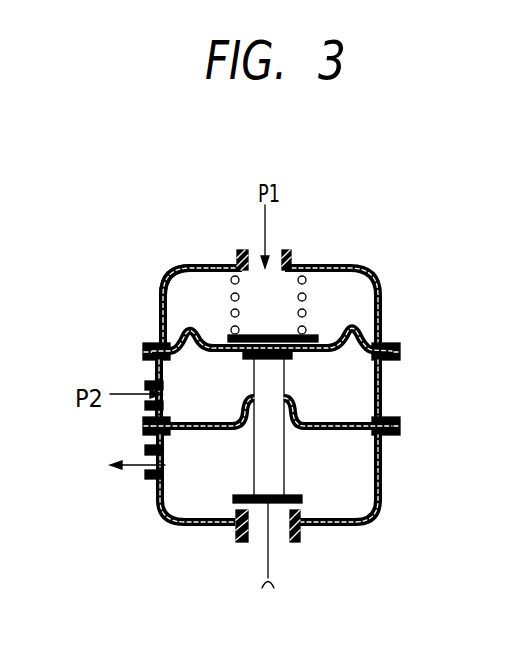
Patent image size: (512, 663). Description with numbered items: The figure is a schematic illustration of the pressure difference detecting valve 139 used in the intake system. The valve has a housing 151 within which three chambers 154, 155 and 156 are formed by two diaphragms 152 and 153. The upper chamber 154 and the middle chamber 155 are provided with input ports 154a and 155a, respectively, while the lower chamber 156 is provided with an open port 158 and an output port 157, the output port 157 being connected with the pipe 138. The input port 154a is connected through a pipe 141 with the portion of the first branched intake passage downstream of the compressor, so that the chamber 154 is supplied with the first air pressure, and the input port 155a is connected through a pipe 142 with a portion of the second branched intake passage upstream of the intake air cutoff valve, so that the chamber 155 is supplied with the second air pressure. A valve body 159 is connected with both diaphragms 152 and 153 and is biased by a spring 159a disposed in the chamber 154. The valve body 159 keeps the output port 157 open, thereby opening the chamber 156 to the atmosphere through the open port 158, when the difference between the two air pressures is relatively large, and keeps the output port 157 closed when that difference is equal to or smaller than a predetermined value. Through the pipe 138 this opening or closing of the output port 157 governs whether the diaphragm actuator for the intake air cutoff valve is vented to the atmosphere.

The pipe 138 is at (274, 562).
The pressure difference detecting valve 139 is at (370, 250).
The pipe 141 is at (270, 272).
The pipe 142 is at (118, 392).
The housing 151 is at (168, 266).
The diaphragm 152 is at (320, 349).
The diaphragm 153 is at (329, 431).
The chamber 154 is at (357, 303).
The input port 154a is at (286, 268).
The chamber 155 is at (367, 395).
The input port 155a is at (148, 400).
The chamber 156 is at (367, 483).
The output port 157 is at (260, 538).
The open port 158 is at (148, 470).
The valve body 159 is at (240, 496).
The spring 159a is at (231, 298).